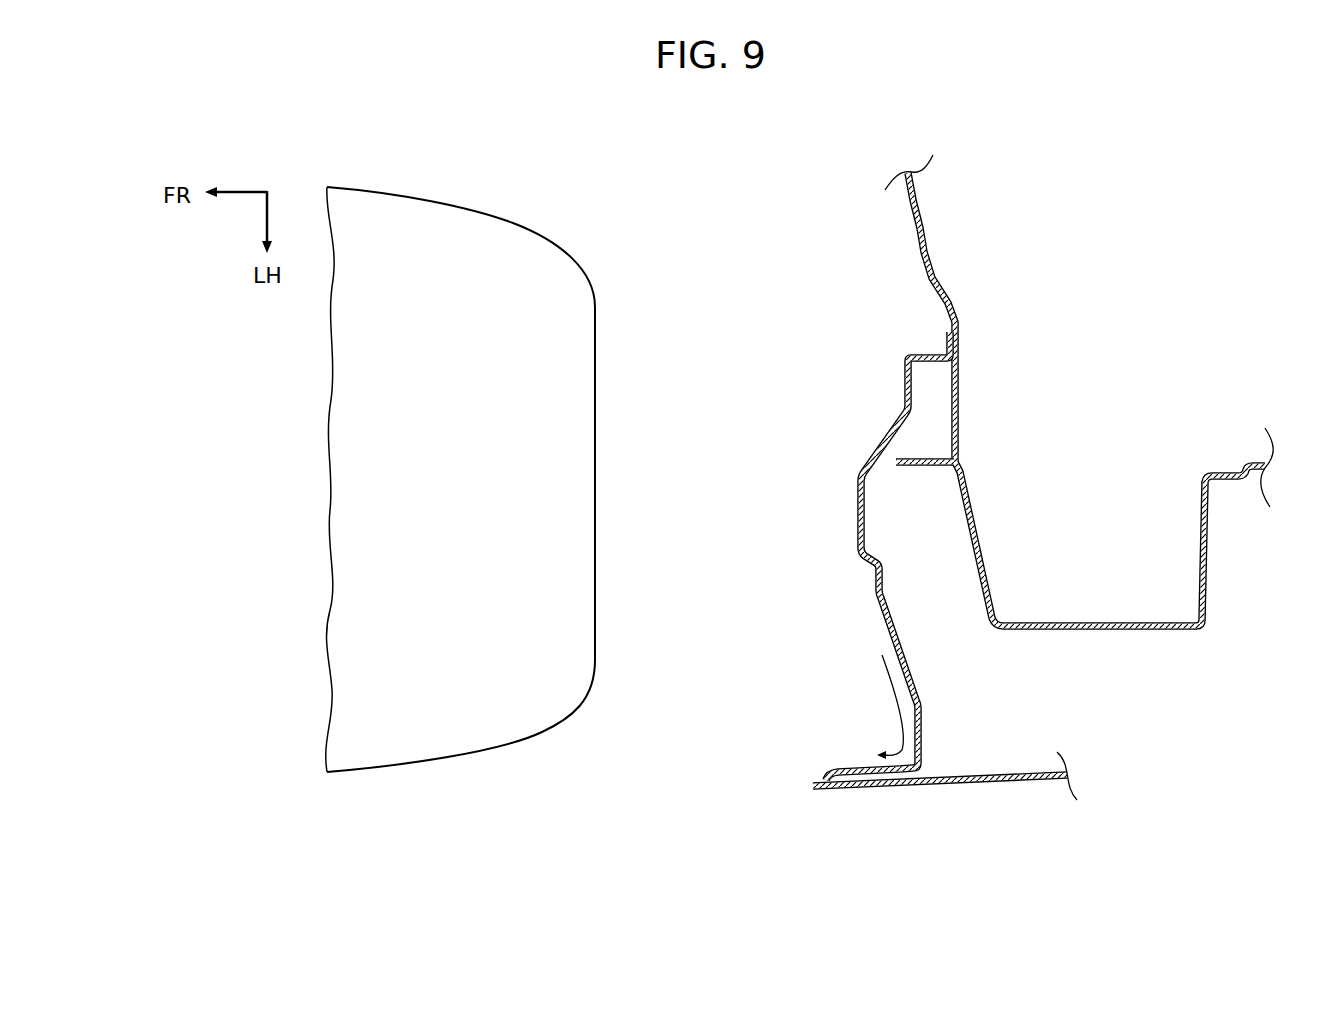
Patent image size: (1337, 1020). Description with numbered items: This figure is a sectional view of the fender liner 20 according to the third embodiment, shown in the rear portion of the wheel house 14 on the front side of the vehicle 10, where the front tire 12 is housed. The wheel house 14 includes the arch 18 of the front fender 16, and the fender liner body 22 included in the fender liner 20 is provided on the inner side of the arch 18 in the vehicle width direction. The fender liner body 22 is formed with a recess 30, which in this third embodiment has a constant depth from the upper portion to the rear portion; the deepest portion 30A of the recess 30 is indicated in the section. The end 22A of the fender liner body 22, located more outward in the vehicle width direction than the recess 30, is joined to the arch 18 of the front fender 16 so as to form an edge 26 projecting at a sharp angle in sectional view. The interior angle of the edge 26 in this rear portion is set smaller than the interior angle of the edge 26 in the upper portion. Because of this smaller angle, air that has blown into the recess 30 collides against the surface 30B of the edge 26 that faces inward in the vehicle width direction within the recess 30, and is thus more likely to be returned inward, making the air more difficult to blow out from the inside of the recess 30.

The vehicle 10 is at (1040, 794).
The front tire 12 is at (480, 205).
The wheel house 14 is at (727, 727).
The front fender 16 is at (947, 787).
The arch 18 is at (813, 790).
The fender liner 20 is at (845, 523).
The fender liner body 22 is at (870, 580).
The end 22A is at (820, 764).
The edge 26 is at (820, 802).
The recess 30 is at (890, 707).
The deepest portion 30A is at (912, 748).
The surface facing inward in the vehicle width direction 30B is at (867, 767).